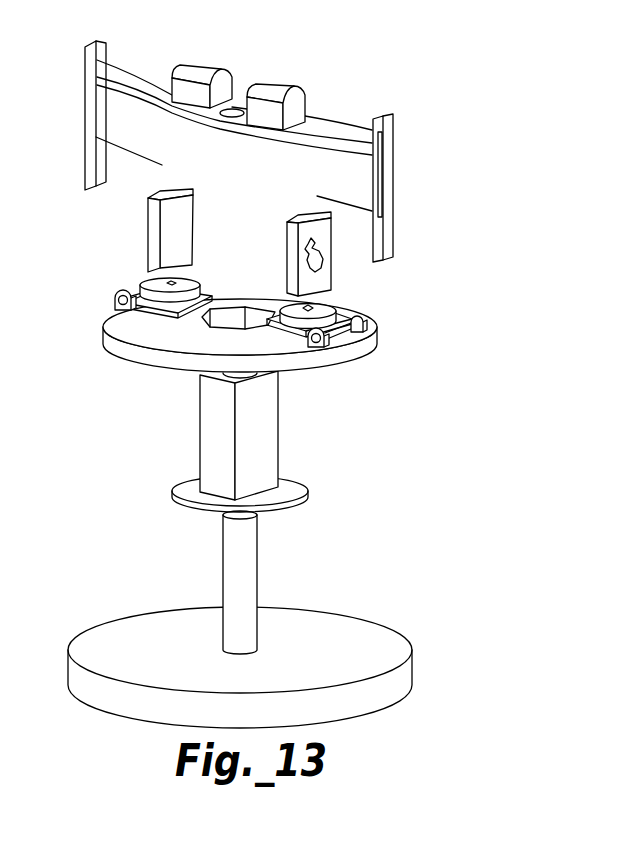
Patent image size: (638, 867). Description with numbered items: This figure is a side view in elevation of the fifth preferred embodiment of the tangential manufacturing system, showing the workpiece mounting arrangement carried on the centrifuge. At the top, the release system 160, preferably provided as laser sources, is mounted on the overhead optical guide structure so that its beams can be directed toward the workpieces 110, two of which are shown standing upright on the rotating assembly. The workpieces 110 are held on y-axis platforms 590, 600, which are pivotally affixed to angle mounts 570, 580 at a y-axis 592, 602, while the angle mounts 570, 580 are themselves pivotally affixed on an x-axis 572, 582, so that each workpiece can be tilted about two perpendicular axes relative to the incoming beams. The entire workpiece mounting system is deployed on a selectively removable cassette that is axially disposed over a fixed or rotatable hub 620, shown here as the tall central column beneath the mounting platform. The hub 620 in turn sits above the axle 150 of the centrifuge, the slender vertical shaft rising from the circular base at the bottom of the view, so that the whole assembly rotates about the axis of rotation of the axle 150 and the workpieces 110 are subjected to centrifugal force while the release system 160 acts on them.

The release system 160 is at (287, 89).
The workpiece 110 is at (177, 215).
The axle 150 is at (250, 547).
The hub 620 is at (255, 447).
The angle mount 570 is at (178, 313).
The angle mount 580 is at (283, 338).
The y-axis 592 is at (148, 284).
The x-axis 572 is at (114, 303).
The y-axis platform 590 is at (183, 287).
The y-axis platform 600 is at (340, 315).
The y-axis 602 is at (323, 307).
The x-axis 582 is at (312, 341).